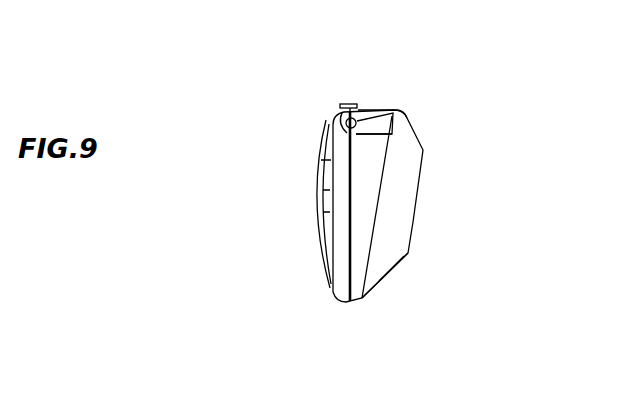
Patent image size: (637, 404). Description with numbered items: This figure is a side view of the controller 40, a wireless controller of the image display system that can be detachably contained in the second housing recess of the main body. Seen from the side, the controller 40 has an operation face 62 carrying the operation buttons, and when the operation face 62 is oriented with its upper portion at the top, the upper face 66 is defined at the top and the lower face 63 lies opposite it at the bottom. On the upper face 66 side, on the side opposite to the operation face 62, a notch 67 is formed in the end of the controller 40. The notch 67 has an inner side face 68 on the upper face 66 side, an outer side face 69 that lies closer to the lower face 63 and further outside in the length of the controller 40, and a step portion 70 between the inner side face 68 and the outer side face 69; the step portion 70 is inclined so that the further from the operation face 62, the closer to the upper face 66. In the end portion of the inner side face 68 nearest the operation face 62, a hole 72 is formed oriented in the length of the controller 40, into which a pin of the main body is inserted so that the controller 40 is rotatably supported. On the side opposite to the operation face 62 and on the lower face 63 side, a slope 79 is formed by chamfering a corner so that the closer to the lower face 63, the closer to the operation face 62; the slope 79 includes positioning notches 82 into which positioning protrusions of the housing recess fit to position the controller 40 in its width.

The controller 40 is at (297, 136).
The operation face 62 is at (313, 172).
The lower face 63 is at (346, 303).
The upper face 66 is at (373, 108).
The notch 67 is at (390, 129).
The inner side face 68 is at (400, 112).
The outer side face 69 is at (365, 110).
The step portion 70 is at (363, 110).
The hole 72 is at (346, 119).
The slope 79 is at (368, 300).
The positioning notch 82 is at (400, 272).